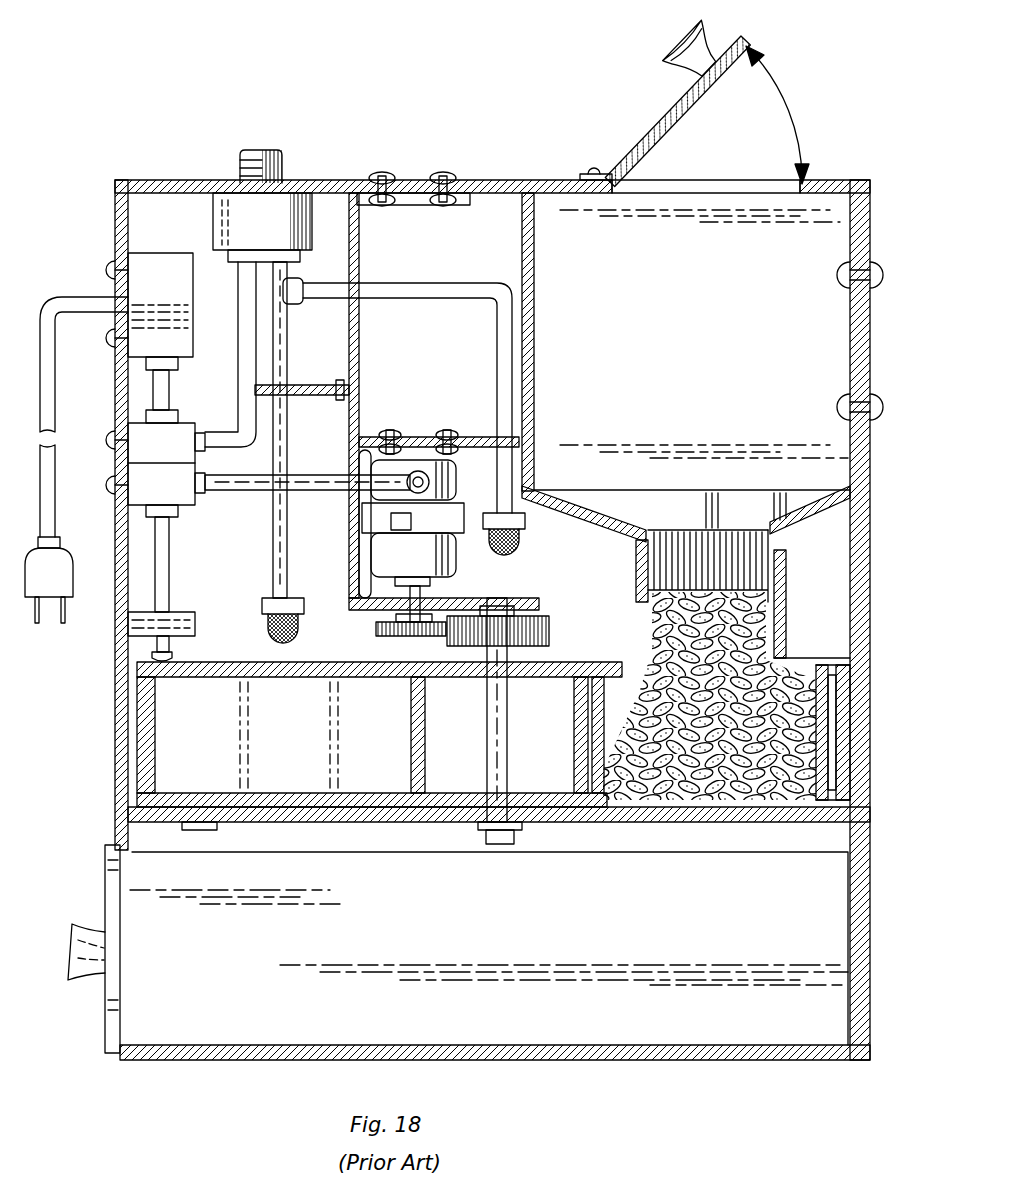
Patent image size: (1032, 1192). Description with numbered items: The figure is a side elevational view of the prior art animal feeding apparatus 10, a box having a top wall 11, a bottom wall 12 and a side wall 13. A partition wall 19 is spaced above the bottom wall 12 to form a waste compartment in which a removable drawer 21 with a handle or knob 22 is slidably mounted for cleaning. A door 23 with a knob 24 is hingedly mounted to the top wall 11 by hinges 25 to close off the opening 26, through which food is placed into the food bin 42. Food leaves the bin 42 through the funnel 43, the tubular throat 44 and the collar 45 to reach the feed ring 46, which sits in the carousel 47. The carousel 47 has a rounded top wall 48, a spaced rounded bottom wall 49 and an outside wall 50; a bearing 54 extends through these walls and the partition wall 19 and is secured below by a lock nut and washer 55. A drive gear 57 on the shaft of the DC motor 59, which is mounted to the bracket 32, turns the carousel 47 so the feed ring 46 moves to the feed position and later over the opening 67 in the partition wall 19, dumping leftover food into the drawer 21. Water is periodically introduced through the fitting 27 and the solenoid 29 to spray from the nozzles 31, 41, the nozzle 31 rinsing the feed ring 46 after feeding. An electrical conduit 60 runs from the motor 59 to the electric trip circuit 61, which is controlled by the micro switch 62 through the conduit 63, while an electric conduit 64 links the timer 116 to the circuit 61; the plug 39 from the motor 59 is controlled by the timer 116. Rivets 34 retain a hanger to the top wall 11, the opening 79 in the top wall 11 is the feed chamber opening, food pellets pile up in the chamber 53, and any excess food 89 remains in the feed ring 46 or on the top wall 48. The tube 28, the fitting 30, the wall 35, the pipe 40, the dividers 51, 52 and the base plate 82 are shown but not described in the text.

The apparatus 10 is at (98, 108).
The top wall 11 is at (497, 180).
The bottom wall 12 is at (233, 1060).
The side wall 13 is at (872, 948).
The partition wall 19 is at (648, 823).
The removable drawer 21 is at (292, 950).
The handle or knob 22 is at (80, 930).
The door 23 is at (718, 70).
The knob 24 is at (648, 86).
The hinges 25 is at (583, 174).
The opening 26 is at (743, 180).
The fitting 27 is at (245, 150).
The tube 28 is at (287, 432).
The solenoid 29 is at (296, 232).
The fitting 30 is at (296, 304).
The nozzle 31 is at (262, 620).
The bracket 32 is at (345, 546).
The rivet 34 is at (380, 170).
The partition wall 35 is at (359, 324).
The plug 39 is at (52, 626).
The pipe 40 is at (405, 283).
The nozzle 41 is at (514, 546).
The food bin 42 is at (682, 364).
The funnel 43 is at (612, 524).
The tubular throat 44 is at (778, 544).
The collar 45 is at (787, 584).
The feed ring 46 is at (612, 677).
The carousel 47 is at (128, 770).
The rounded top wall 48 is at (568, 662).
The rounded bottom wall 49 is at (298, 790).
The outside wall 50 is at (157, 716).
The divider 51 is at (411, 735).
The divider 52 is at (574, 726).
The chamber 53 is at (850, 704).
The bearing 54 is at (487, 728).
The lock nut and washer 55 is at (478, 836).
The drive gear 57 is at (446, 432).
The DC motor 59 is at (432, 478).
The electrical conduit 60 is at (302, 490).
The electric trip circuit 61 is at (180, 492).
The micro switch 62 is at (196, 613).
The conduit 63 is at (170, 562).
The electric conduit 64 is at (170, 388).
The opening 67 is at (206, 831).
The opening 79 is at (805, 680).
The base plate 82 is at (760, 823).
The excess food 89 is at (656, 688).
The timer 116 is at (149, 264).